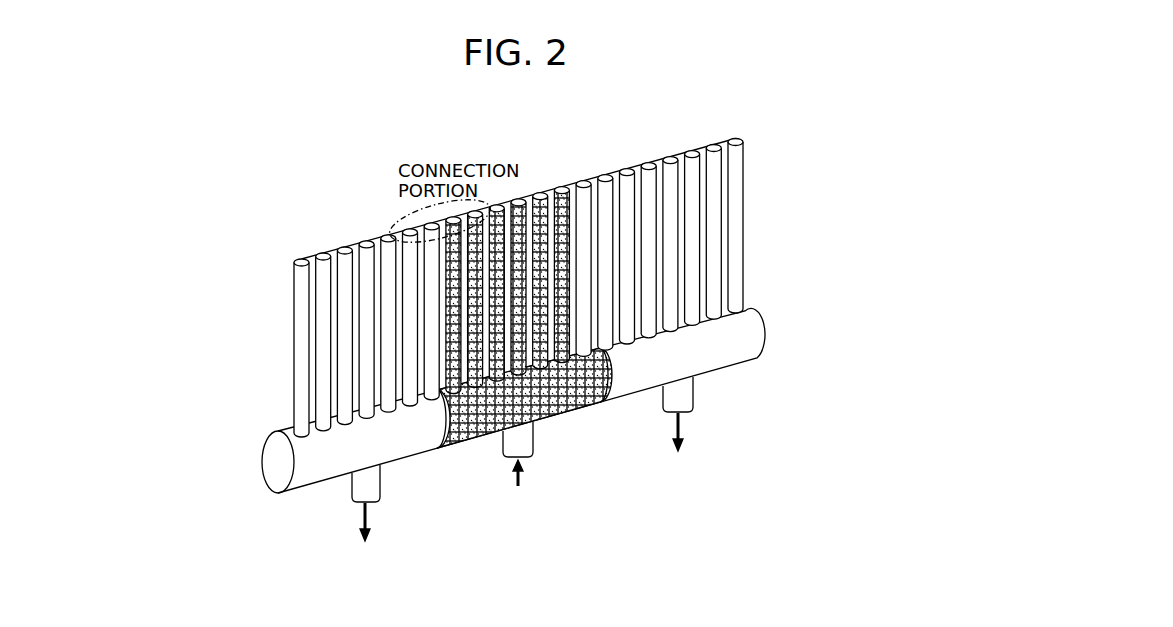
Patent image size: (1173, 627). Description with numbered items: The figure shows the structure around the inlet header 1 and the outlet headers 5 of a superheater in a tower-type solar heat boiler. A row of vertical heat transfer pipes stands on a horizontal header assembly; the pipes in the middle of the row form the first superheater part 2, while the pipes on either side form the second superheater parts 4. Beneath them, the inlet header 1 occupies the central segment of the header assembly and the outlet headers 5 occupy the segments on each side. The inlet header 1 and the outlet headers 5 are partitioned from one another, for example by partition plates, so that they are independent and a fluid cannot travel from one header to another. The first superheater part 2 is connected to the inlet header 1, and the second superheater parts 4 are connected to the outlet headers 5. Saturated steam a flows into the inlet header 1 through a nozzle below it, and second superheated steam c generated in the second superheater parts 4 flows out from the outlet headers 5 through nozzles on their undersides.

The inlet header 1 is at (581, 388).
The first superheater part 2 is at (545, 196).
The second superheater part 4 is at (770, 162).
The outlet header 5 is at (733, 340).
The saturated steam a is at (536, 493).
The second superheated steam c is at (604, 498).